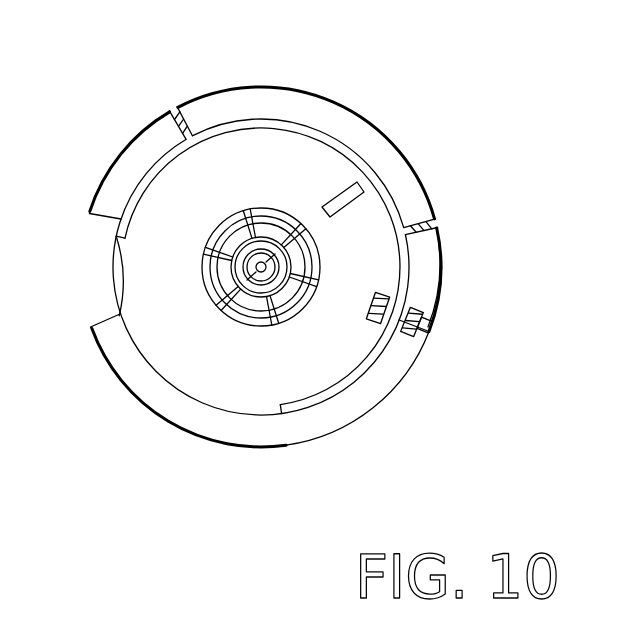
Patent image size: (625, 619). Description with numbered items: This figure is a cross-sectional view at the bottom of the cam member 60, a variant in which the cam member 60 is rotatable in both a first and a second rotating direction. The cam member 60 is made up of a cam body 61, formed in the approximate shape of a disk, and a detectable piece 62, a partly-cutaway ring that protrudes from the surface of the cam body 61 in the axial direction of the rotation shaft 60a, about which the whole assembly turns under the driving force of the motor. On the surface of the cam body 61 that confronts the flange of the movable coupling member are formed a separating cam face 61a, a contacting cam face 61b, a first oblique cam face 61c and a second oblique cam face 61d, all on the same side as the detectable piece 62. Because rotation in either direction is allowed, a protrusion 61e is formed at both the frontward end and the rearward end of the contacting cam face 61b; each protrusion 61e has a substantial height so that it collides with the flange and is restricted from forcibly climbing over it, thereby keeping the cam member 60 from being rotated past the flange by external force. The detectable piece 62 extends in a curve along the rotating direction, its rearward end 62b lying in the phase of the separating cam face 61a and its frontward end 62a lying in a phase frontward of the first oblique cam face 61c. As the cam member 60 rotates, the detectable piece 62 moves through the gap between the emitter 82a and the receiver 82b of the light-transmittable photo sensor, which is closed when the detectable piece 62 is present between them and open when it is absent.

The cam member 60 is at (270, 282).
The rotation shaft 60a is at (240, 280).
The cam body 61 is at (293, 255).
The separating cam face 61a is at (187, 423).
The contacting cam face 61b is at (283, 96).
The first oblique cam face 61c is at (131, 152).
The second oblique cam face 61d is at (430, 280).
The protrusion 61e is at (184, 108).
The detectable piece 62 is at (222, 299).
The frontward end 62a is at (112, 250).
The rearward end 62b is at (277, 405).
The emitter 82a is at (372, 325).
The receiver 82b is at (424, 328).